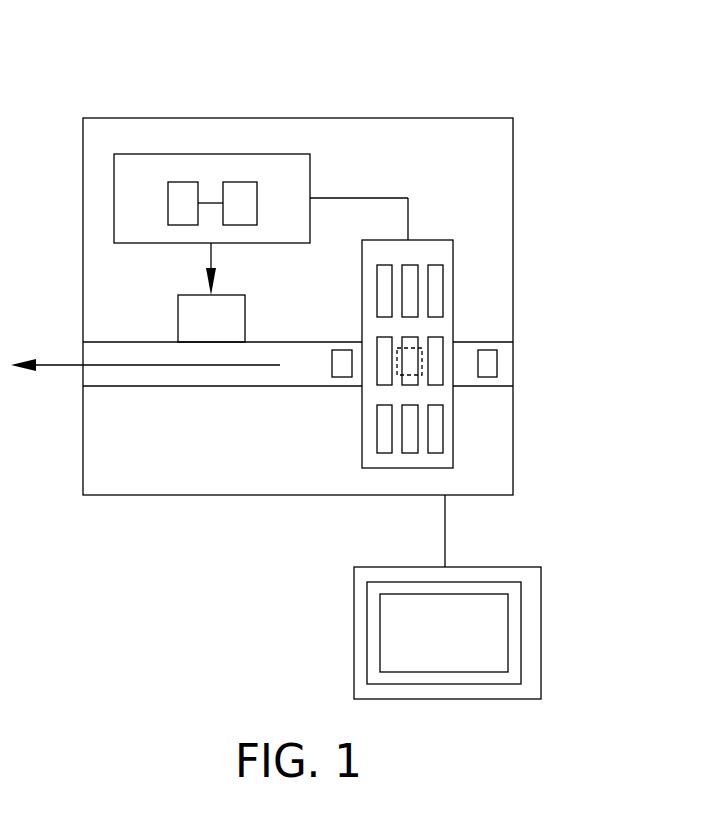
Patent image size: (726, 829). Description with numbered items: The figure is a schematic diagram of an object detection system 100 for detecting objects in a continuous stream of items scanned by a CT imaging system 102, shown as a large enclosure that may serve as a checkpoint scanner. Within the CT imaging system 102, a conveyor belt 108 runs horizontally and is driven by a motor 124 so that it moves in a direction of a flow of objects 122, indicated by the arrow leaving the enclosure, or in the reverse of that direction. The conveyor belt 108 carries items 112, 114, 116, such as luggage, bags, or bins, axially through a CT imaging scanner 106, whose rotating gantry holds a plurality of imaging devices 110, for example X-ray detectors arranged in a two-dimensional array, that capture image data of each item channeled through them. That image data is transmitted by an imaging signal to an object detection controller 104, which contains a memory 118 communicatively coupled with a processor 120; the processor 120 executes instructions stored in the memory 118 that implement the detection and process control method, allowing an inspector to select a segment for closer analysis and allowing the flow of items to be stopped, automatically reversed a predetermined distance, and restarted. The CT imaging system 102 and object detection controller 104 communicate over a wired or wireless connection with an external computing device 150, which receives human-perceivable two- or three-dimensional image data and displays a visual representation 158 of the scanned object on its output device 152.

The object detection system 100 is at (600, 97).
The CT imaging system 102 is at (273, 118).
The object detection controller 104 is at (198, 154).
The CT imaging scanner 106 is at (455, 452).
The conveyor belt 108 is at (483, 341).
The plurality of imaging devices 110 is at (436, 262).
The item 112 is at (342, 375).
The item 114 is at (418, 374).
The item 116 is at (495, 365).
The memory 118 is at (168, 188).
The processor 120 is at (257, 184).
The direction of a flow of objects 122 is at (57, 362).
The motor 124 is at (178, 318).
The external computing device 150 is at (353, 593).
The output device 152 is at (373, 668).
The visual representation 158 is at (466, 646).